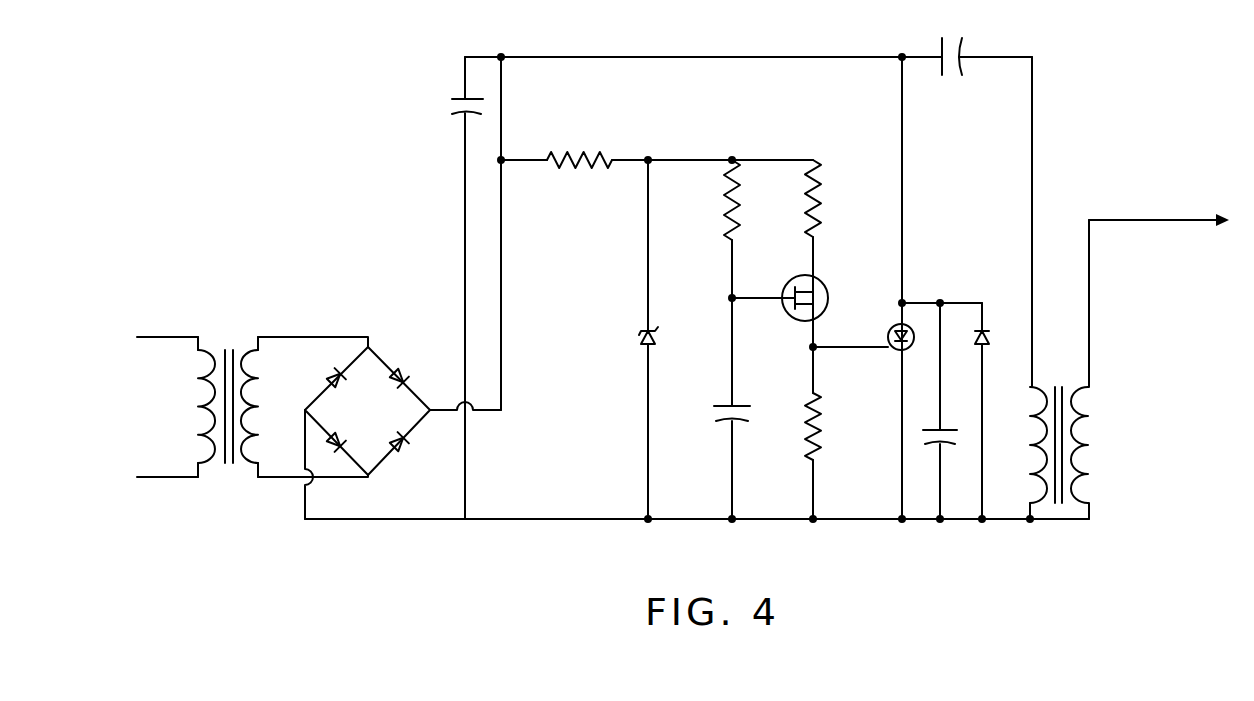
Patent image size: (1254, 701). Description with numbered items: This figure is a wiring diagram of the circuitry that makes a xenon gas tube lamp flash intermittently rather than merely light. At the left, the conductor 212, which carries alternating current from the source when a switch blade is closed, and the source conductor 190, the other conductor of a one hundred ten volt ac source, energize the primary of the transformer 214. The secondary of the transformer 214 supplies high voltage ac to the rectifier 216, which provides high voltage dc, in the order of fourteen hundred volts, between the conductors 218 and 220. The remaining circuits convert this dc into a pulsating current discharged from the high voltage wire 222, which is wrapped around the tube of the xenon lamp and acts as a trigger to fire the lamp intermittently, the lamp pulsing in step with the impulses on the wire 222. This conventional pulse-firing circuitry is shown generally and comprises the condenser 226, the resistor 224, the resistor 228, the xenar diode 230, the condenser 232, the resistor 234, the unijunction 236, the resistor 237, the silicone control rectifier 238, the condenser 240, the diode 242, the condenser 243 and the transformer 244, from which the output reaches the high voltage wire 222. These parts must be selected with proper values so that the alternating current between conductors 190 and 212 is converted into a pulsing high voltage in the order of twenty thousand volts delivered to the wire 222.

The source conductor 190 is at (173, 477).
The conductor 212 is at (158, 337).
The transformer 214 is at (228, 337).
The rectifier 216 is at (438, 329).
The conductor 218 is at (502, 410).
The conductor 220 is at (305, 496).
The high voltage wire 222 is at (1143, 220).
The resistor 224 is at (613, 165).
The condenser 226 is at (467, 112).
The resistor 228 is at (724, 225).
The xenar diode 230 is at (641, 343).
The condenser 232 is at (718, 415).
The resistor 234 is at (822, 228).
The unijunction 236 is at (829, 284).
The resistor 237 is at (822, 432).
The silicone control rectifier 238 is at (896, 349).
The condenser 240 is at (960, 48).
The diode 242 is at (1012, 291).
The condenser 243 is at (945, 444).
The transformer 244 is at (1080, 352).